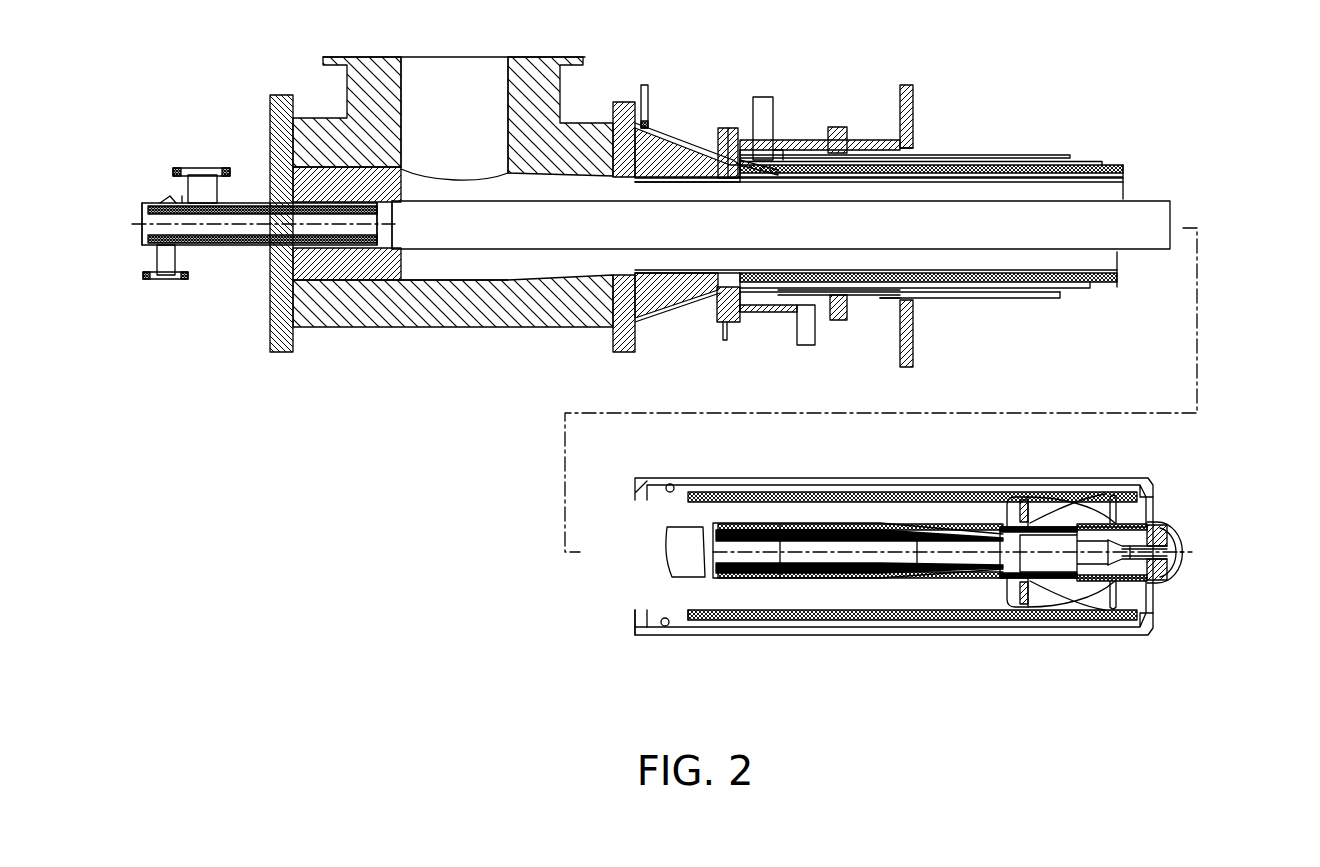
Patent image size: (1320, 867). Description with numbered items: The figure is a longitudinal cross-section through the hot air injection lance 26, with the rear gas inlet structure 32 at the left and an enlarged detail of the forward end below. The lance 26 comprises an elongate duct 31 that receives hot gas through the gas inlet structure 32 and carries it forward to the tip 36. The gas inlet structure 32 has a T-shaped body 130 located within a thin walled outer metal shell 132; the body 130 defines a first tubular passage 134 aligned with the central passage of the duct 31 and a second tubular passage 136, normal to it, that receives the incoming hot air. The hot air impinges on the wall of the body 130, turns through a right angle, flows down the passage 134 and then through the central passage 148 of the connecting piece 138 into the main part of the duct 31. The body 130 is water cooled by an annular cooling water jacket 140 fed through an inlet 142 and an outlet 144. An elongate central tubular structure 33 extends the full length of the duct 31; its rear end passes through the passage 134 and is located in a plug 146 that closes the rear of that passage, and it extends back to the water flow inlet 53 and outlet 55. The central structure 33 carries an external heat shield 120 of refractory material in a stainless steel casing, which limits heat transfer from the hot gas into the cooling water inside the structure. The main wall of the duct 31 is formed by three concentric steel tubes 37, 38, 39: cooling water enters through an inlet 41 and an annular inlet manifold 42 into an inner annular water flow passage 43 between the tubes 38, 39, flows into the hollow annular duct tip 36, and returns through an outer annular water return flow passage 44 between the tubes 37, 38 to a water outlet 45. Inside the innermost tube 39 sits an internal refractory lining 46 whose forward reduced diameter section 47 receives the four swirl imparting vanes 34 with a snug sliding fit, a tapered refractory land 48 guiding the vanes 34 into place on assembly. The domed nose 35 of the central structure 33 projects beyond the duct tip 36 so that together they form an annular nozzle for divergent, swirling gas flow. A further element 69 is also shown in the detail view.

The hot air injection lance 26 is at (980, 145).
The elongate duct 31 is at (922, 150).
The gas inlet structure 32 is at (578, 106).
The central tubular structure 33 is at (448, 262).
The swirl imparting vanes 34 is at (1090, 505).
The domed nose 35 is at (1191, 549).
The duct tip 36 is at (1150, 489).
The outer steel tube 37 is at (970, 300).
The intermediate steel tube 38 is at (1030, 293).
The innermost steel tube 39 is at (1075, 289).
The water inlet 41 is at (764, 107).
The annular inlet manifold 42 is at (763, 155).
The inner annular water flow passage 43 is at (1100, 163).
The outer annular water return flow passage 44 is at (1070, 158).
The water outlet 45 is at (802, 342).
The internal refractory lining 46 is at (860, 183).
The reduced diameter section 47 is at (900, 612).
The tapered refractory land 48 is at (855, 602).
The water flow inlet 53 is at (161, 270).
The water flow outlet 55 is at (202, 218).
The spacer block 69 is at (797, 616).
The external heat shield 120 is at (478, 195).
The T-shaped body 130 is at (318, 127).
The thin walled outer metal shell 132 is at (323, 320).
The first tubular passage 134 is at (537, 265).
The second tubular passage 136 is at (455, 111).
The connecting piece 138 is at (667, 160).
The annular cooling water jacket 140 is at (655, 317).
The cooling water inlet 142 is at (722, 341).
The cooling water outlet 144 is at (645, 86).
The plug 146 is at (384, 265).
The central passage 148 is at (700, 190).